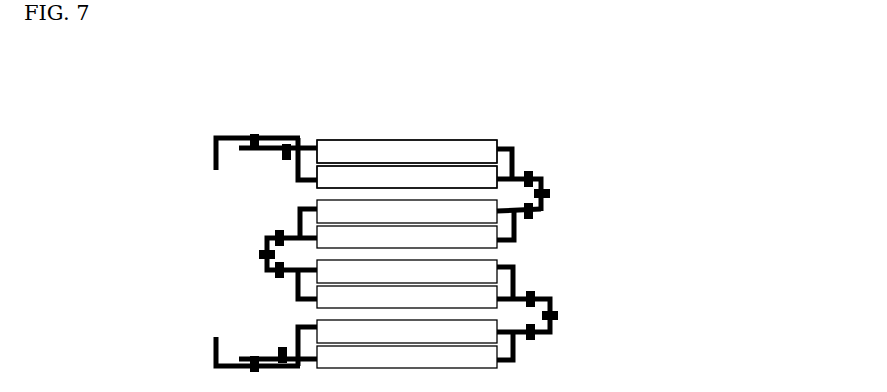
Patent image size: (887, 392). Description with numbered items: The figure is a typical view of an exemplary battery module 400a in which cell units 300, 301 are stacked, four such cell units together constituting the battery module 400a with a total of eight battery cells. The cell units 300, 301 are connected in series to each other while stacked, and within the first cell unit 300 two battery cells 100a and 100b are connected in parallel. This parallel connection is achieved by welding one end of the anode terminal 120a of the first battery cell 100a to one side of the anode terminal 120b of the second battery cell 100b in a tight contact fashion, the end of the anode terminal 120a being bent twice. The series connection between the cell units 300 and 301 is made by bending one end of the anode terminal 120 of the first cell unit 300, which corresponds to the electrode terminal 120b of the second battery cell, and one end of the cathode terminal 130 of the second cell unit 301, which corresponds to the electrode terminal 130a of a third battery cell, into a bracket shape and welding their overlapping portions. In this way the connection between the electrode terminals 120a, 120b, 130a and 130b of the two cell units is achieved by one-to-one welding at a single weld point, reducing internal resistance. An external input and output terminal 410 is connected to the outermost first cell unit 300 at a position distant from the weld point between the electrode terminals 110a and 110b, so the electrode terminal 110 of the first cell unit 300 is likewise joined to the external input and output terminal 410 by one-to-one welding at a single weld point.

The battery module 400a is at (172, 66).
The first cell unit 300 is at (492, 128).
The first battery cell 100a is at (355, 158).
The second battery cell 100b is at (408, 185).
The electrode terminal 110 is at (190, 139).
The electrode terminal 110a is at (300, 145).
The electrode terminal 110b is at (297, 173).
The external input and output terminal 410 is at (216, 137).
The anode terminal 120 is at (628, 143).
The anode terminal 120a is at (514, 152).
The anode terminal 120b is at (550, 182).
The cathode terminal 130 is at (641, 220).
The electrode terminal 130a is at (550, 208).
The electrode terminal 130b is at (518, 228).
The second cell unit 301 is at (254, 232).